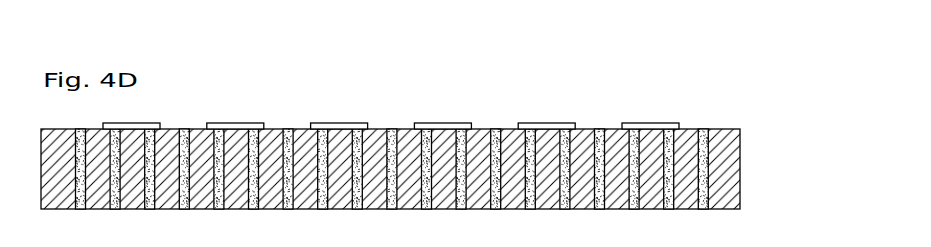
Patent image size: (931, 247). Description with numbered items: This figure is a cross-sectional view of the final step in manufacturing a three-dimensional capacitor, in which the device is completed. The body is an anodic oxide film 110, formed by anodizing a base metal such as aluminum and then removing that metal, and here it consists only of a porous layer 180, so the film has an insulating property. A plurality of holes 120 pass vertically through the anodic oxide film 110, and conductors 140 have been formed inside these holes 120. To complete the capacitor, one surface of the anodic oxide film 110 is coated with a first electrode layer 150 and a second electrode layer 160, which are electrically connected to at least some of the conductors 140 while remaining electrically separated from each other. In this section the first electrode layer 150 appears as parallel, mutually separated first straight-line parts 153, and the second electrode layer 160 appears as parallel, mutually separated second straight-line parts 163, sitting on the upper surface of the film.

The anodic oxide film 110 is at (454, 169).
The porous layer 180 is at (730, 185).
The holes 120 is at (703, 148).
The conductors 140 is at (702, 131).
The first straight-line parts 153 is at (494, 92).
The first electrode layer 150 is at (548, 123).
The second straight-line parts 163 is at (628, 87).
The second electrode layer 160 is at (648, 123).